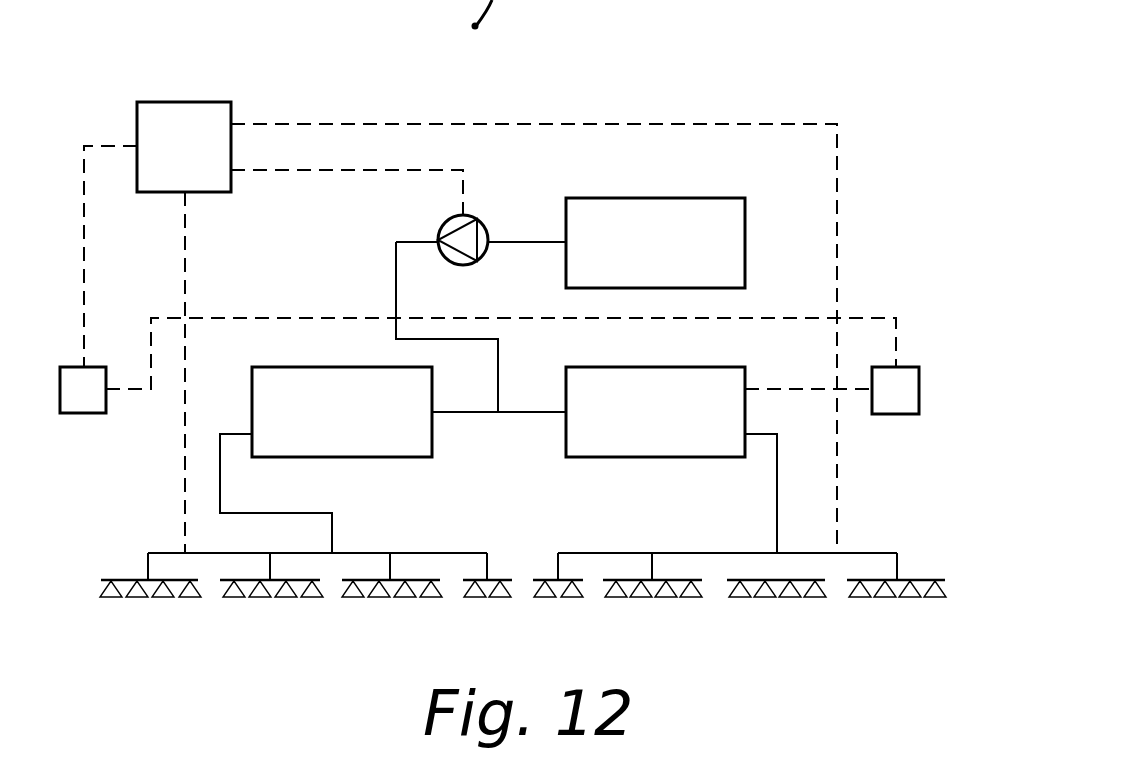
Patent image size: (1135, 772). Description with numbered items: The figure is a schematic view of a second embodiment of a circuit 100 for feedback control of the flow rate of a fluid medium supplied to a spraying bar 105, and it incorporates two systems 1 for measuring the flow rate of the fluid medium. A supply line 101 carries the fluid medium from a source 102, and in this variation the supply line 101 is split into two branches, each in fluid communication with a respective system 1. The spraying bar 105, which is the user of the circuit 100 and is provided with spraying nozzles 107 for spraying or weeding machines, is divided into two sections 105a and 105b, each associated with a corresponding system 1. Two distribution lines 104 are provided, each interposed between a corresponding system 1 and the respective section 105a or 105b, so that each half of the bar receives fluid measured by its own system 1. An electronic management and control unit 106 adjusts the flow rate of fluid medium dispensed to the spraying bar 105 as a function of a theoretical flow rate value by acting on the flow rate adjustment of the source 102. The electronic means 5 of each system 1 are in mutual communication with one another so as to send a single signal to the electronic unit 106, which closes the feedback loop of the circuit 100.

The circuit 100 is at (848, 99).
The supply line 101 is at (441, 228).
The source 102 is at (671, 198).
The electronic management and control unit 106 is at (172, 113).
The electronic means 5 is at (98, 367).
The system for measuring the flow rate of a fluid medium 1 is at (323, 360).
The distribution line 104 is at (220, 480).
The spraying bar 105 is at (266, 634).
The first section of the spraying bar 105a is at (151, 607).
The second section of the spraying bar 105b is at (798, 632).
The spraying nozzles 107 is at (375, 600).